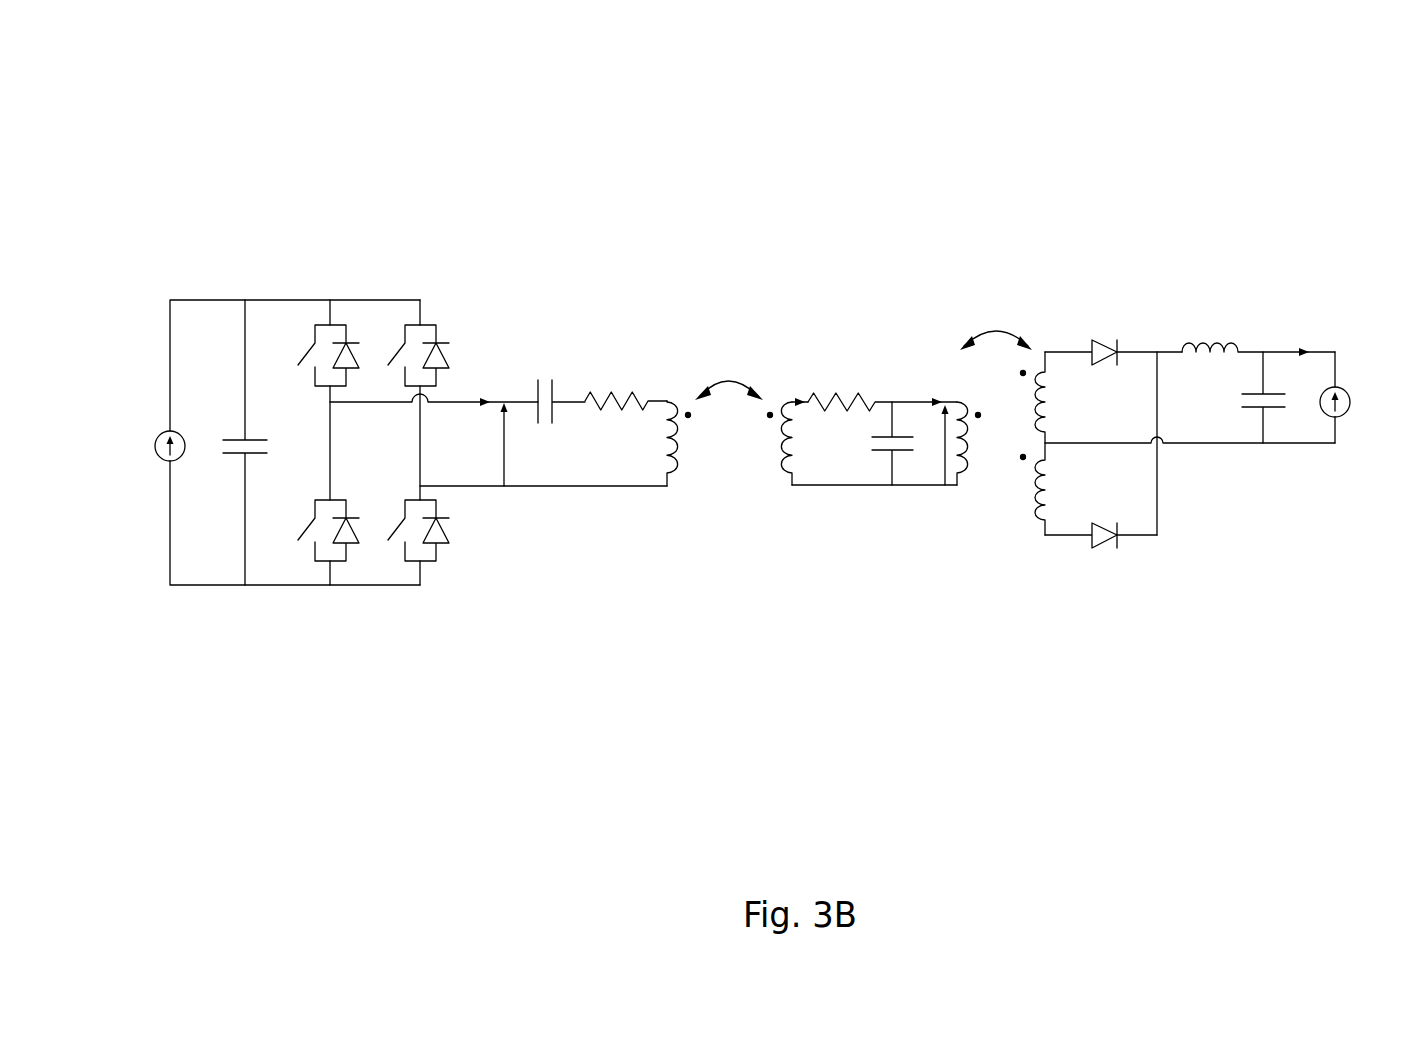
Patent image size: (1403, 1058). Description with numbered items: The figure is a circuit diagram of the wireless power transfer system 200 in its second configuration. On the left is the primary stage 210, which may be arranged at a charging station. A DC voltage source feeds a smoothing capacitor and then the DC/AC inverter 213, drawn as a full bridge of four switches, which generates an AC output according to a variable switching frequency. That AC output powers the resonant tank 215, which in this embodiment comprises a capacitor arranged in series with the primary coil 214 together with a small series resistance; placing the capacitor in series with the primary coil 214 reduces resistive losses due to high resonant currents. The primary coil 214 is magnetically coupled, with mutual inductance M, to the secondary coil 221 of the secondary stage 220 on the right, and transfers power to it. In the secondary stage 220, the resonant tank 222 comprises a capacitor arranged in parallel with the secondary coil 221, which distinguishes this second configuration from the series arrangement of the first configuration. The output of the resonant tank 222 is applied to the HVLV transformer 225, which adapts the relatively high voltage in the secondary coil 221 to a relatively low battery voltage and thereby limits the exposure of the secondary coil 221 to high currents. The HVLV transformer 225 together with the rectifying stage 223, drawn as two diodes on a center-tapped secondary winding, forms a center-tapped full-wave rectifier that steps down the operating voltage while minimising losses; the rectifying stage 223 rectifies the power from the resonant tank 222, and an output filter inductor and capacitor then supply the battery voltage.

The wireless power transfer system 200 is at (428, 107).
The primary stage 210 is at (678, 257).
The DC/AC inverter 213 is at (440, 613).
The resonant tank 215 is at (653, 537).
The primary coil 214 is at (673, 473).
The secondary stage 220 is at (1322, 232).
The secondary coil 221 is at (780, 475).
The resonant tank 222 is at (938, 545).
The HVLV transformer 225 is at (1050, 545).
The rectifying stage 223 is at (1162, 545).